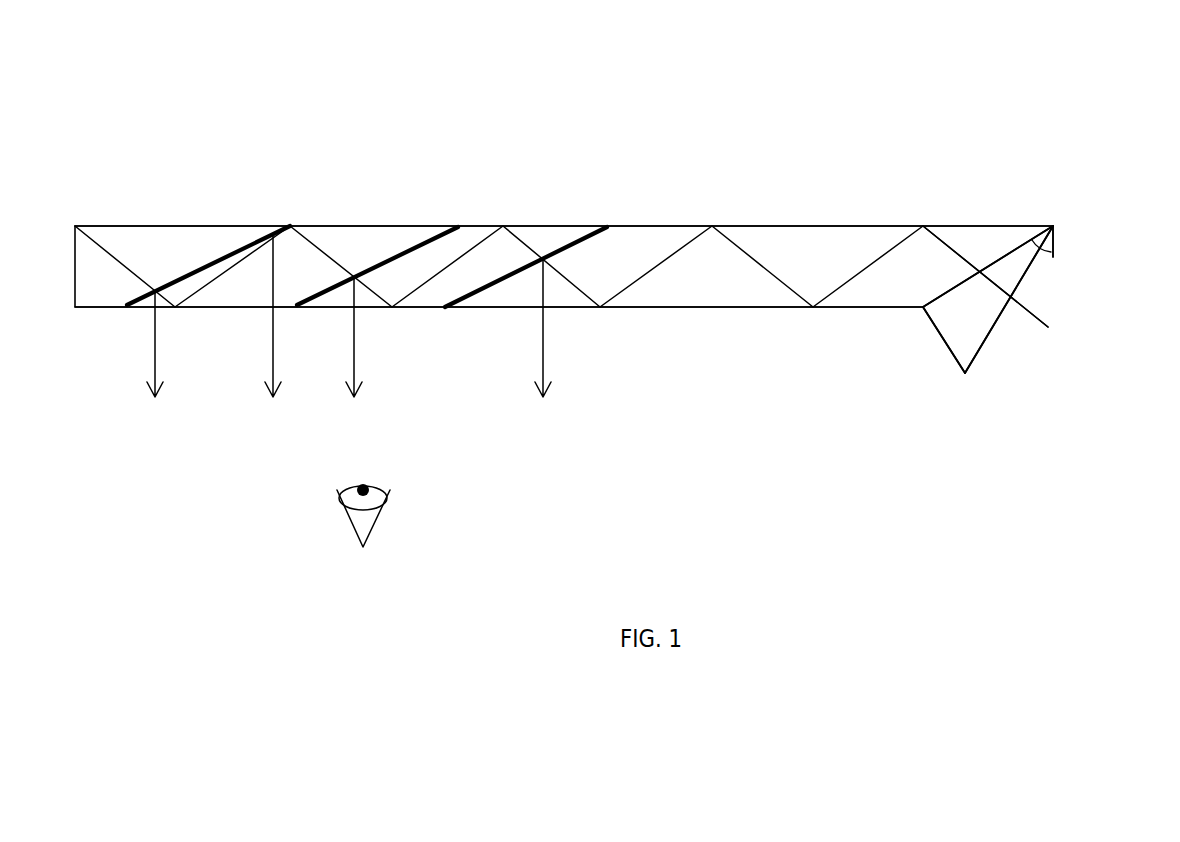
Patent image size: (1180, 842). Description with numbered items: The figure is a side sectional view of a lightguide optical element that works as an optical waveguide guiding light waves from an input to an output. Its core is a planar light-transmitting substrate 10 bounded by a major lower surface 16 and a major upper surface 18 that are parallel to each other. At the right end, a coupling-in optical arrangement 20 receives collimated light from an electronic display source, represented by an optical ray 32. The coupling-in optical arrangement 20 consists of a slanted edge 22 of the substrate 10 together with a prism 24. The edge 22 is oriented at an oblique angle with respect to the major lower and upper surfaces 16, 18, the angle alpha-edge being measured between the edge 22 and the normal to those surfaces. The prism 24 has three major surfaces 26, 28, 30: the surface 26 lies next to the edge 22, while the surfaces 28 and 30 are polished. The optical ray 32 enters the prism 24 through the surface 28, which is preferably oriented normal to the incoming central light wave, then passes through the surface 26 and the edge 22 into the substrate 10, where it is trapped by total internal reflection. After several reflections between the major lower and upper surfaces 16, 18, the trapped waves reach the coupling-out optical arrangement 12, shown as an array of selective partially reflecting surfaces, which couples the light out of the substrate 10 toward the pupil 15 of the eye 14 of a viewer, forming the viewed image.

The planar light-transmitting substrate 10 is at (772, 247).
The coupling-out optical arrangement 12 is at (603, 227).
The eye 14 is at (380, 513).
The pupil 15 is at (363, 485).
The major lower surface 16 is at (727, 308).
The major upper surface 18 is at (842, 225).
The coupling-in optical arrangement 20 is at (978, 412).
The slanted edge 22 is at (995, 257).
The prism 24 is at (977, 317).
The surface 26 is at (947, 293).
The surface 28 is at (977, 355).
The surface 30 is at (953, 355).
The optical ray 32 is at (1050, 317).